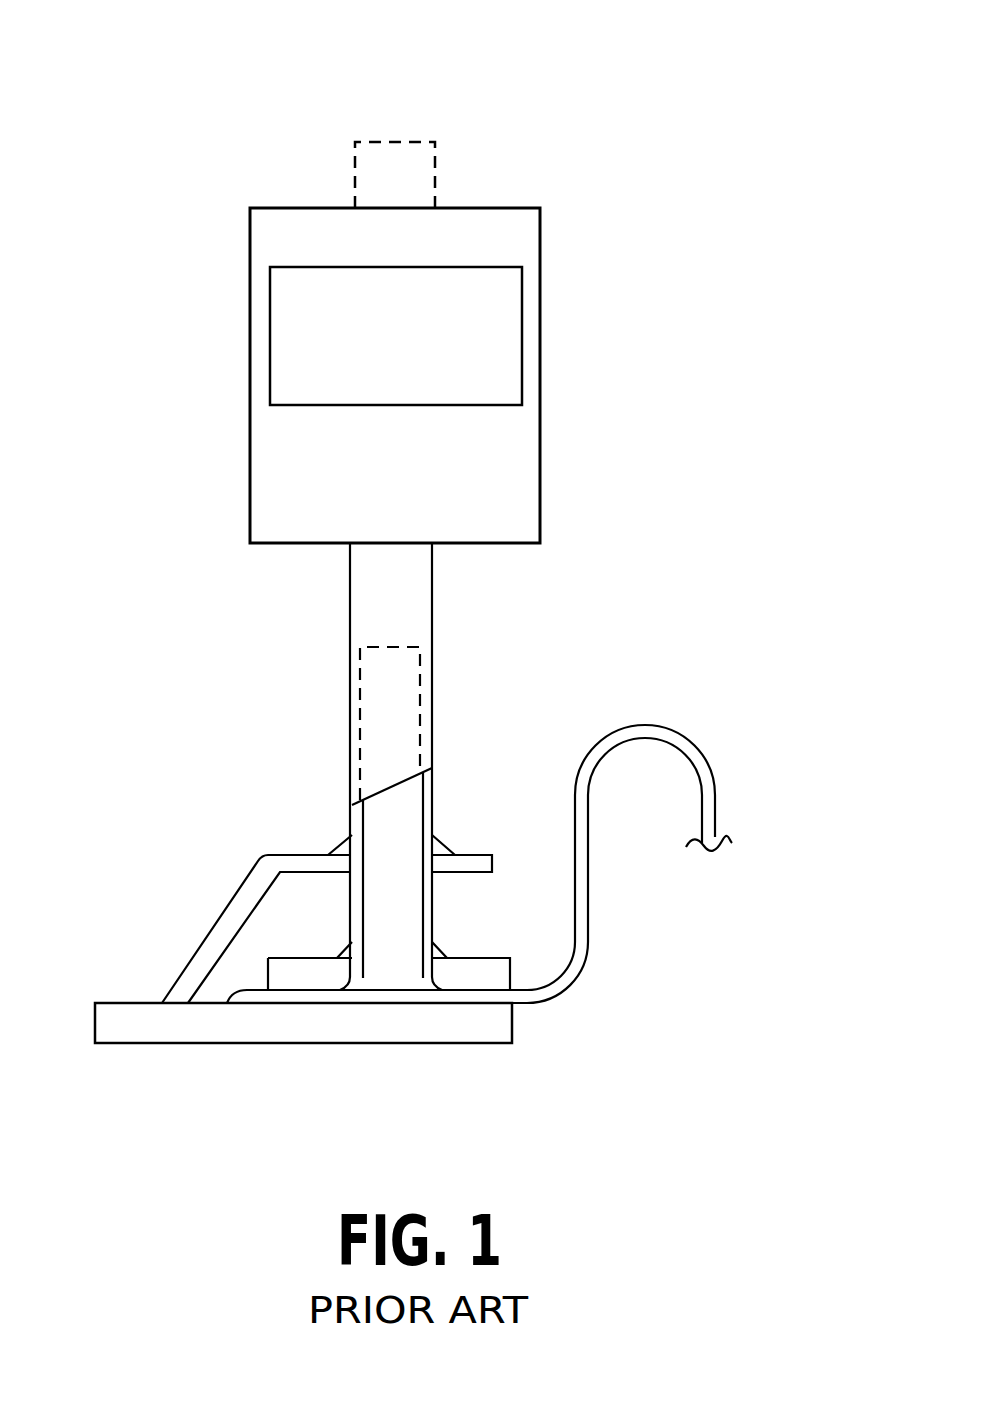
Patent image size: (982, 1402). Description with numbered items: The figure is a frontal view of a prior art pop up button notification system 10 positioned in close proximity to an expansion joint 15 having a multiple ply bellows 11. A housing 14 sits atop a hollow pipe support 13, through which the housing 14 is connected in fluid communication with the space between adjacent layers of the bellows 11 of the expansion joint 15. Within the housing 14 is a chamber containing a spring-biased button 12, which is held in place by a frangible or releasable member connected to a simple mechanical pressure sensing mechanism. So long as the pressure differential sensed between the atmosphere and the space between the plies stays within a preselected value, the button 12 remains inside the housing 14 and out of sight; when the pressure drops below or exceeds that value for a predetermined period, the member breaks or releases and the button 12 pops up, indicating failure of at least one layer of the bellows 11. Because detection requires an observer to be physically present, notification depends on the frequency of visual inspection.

The pop up button notification system 10 is at (567, 138).
The bellows 11 is at (672, 715).
The spring-biased button 12 is at (409, 127).
The hollow pipe support 13 is at (340, 712).
The housing 14 is at (552, 433).
The expansion joint 15 is at (566, 1029).